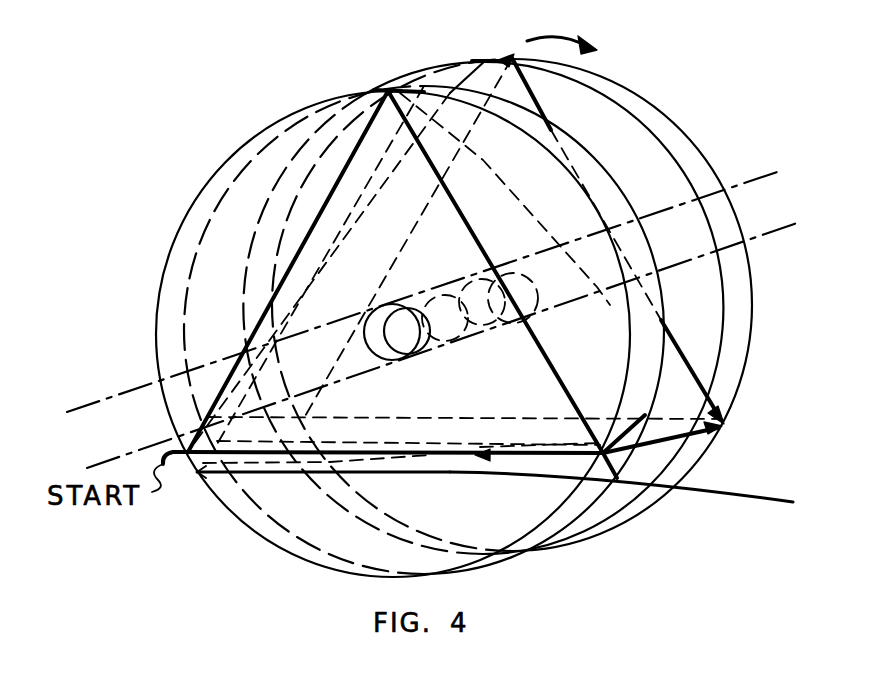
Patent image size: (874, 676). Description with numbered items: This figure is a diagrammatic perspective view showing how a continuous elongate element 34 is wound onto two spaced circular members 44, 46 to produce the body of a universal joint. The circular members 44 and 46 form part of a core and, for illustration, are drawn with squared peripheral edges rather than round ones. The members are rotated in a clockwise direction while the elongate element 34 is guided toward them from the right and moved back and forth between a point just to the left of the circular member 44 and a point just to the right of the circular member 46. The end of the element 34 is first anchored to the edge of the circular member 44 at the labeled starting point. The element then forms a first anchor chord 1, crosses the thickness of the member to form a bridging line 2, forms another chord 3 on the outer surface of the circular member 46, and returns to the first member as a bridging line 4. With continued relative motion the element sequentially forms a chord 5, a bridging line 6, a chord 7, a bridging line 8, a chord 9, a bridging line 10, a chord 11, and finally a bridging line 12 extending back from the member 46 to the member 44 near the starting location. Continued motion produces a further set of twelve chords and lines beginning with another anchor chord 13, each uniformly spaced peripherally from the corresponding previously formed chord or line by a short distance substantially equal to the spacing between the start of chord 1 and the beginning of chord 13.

The anchor chord 1 is at (433, 466).
The bridging line 2 is at (550, 126).
The chord 3 is at (470, 130).
The bridging line 4 is at (374, 443).
The chord 5 is at (546, 353).
The bridging line 6 is at (342, 206).
The chord 7 is at (360, 414).
The bridging line 8 is at (520, 197).
The chord 9 is at (330, 200).
The bridging line 10 is at (547, 446).
The chord 11 is at (494, 58).
The bridging line 12 is at (408, 160).
The anchor chord 13 is at (252, 466).
The continuous elongate element 34 is at (740, 502).
The circular member 44 is at (213, 174).
The circular member 46 is at (424, 68).